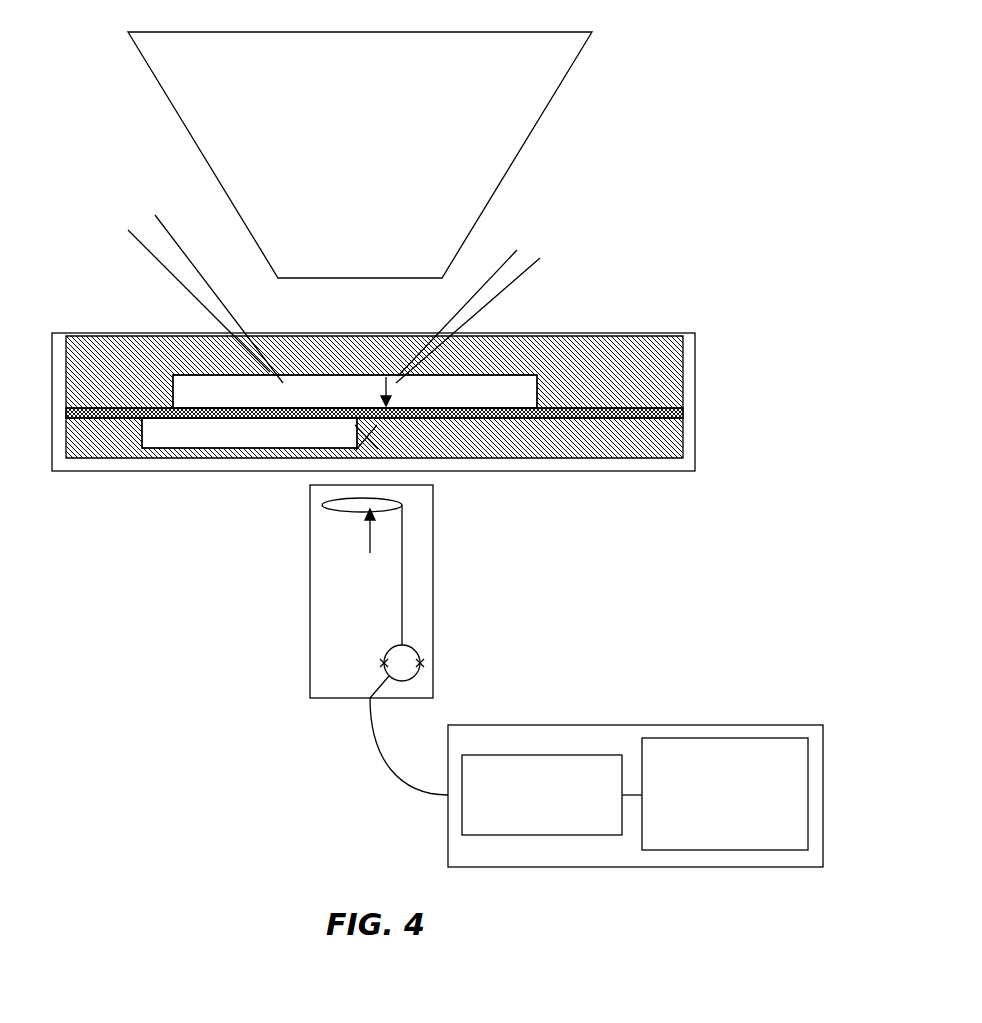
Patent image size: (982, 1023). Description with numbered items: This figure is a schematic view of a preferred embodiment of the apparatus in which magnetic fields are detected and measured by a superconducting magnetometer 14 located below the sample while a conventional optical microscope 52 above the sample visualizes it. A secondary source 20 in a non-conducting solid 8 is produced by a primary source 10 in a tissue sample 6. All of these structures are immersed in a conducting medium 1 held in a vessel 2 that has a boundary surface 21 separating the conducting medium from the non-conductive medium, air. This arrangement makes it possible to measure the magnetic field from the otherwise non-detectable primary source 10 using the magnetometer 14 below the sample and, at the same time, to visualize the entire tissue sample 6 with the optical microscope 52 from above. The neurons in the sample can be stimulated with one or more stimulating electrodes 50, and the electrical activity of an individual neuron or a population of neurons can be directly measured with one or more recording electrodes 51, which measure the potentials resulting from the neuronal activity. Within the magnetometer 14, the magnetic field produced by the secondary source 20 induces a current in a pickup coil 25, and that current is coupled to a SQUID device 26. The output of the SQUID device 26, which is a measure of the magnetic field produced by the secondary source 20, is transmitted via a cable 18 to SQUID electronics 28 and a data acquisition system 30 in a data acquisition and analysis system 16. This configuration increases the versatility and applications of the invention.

The conducting medium 1 is at (568, 448).
The vessel 2 is at (697, 383).
The tissue sample 6 is at (500, 383).
The non-conducting solid 8 is at (192, 445).
The primary source 10 is at (395, 382).
The magnetometer 14 is at (310, 650).
The data acquisition and analysis system 16 is at (660, 725).
The cable 18 is at (418, 790).
The secondary source 20 is at (370, 448).
The boundary surface 21 is at (127, 333).
The pickup coil 25 is at (348, 513).
The SQUID device 26 is at (415, 677).
The SQUID electronics 28 is at (552, 755).
The data acquisition system 30 is at (733, 738).
The stimulating electrode 50 is at (143, 224).
The recording electrode 51 is at (527, 253).
The optical microscope 52 is at (530, 88).